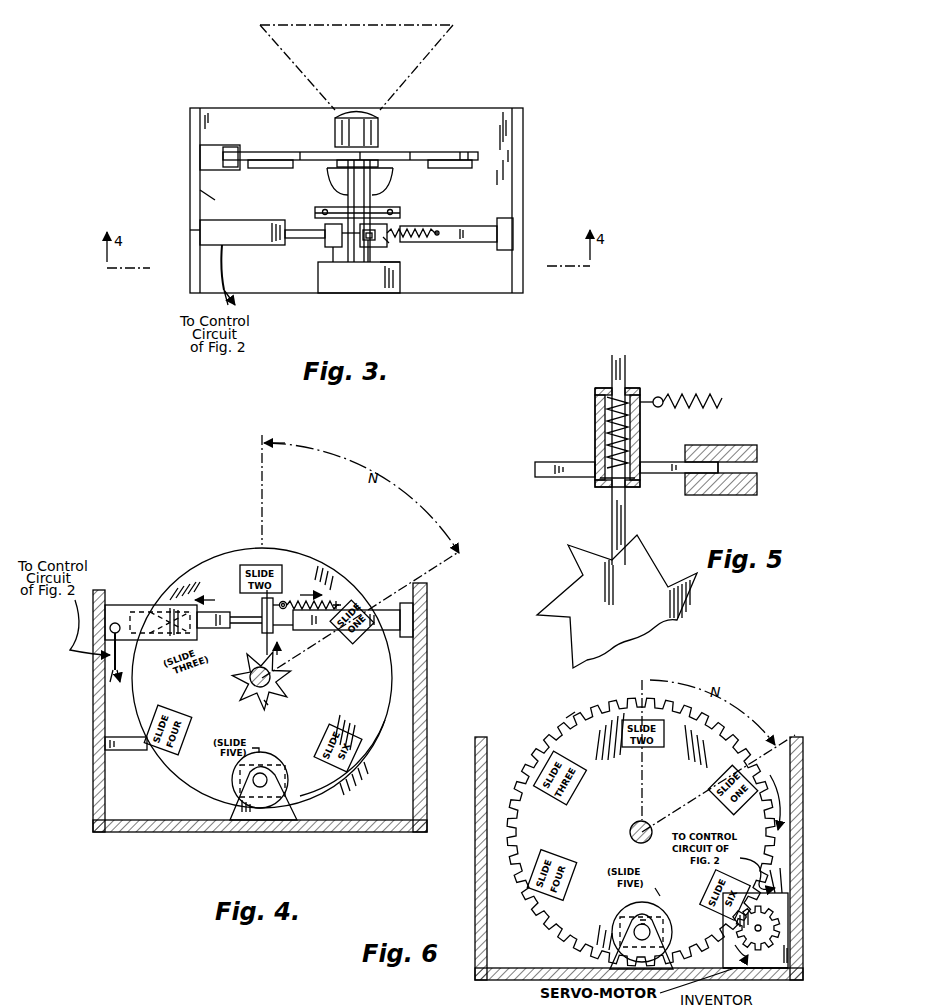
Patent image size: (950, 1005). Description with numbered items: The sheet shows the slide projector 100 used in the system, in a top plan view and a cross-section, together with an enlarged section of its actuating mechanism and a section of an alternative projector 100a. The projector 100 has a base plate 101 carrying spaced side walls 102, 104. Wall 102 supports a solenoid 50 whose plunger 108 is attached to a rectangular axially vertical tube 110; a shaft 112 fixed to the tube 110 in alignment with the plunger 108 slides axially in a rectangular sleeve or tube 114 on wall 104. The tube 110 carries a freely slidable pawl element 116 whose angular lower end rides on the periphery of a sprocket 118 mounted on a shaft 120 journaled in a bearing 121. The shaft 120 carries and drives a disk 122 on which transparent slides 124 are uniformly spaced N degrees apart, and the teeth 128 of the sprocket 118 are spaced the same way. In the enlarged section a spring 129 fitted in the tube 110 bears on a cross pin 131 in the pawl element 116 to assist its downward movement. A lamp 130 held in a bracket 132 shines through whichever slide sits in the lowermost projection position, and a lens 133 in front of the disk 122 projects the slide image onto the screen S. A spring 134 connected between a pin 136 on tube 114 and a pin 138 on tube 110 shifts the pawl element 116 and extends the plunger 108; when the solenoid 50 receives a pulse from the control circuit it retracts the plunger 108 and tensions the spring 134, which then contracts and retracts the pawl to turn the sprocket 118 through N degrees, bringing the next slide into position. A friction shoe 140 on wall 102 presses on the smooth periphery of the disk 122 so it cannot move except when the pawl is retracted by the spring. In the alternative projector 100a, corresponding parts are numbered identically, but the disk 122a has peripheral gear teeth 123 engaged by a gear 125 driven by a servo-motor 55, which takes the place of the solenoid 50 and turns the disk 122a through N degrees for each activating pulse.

In FIG. 3, the screen S is at (413, 26).
In FIG. 3, the solenoid 50 is at (250, 235).
In FIG. 4, the solenoid 50 is at (140, 605).
In FIG. 6, the servo-motor 55 is at (785, 905).
In FIG. 3, the slide projector 100 is at (530, 150).
In FIG. 6, the slide projector 100 is at (490, 693).
In FIG. 6, the projector 100a is at (805, 742).
In FIG. 3, the base plate 101 is at (215, 198).
In FIG. 4, the base plate 101 is at (335, 832).
In FIG. 6, the base plate 101 is at (510, 978).
In FIG. 3, the side wall 102 is at (196, 222).
In FIG. 4, the side wall 102 is at (97, 800).
In FIG. 6, the side wall 102 is at (477, 885).
In FIG. 4, the side wall 104 is at (427, 622).
In FIG. 6, the side wall 104 is at (795, 765).
In FIG. 3, the plunger 108 is at (308, 238).
In FIG. 4, the plunger 108 is at (215, 612).
In FIG. 5, the plunger 108 is at (552, 472).
In FIG. 3, the rectangular axially vertical tube 110 is at (347, 250).
In FIG. 4, the rectangular axially vertical tube 110 is at (262, 600).
In FIG. 5, the rectangular axially vertical tube 110 is at (597, 408).
In FIG. 4, the shaft 112 is at (290, 630).
In FIG. 5, the shaft 112 is at (662, 475).
In FIG. 3, the rectangular sleeve or tube 114 is at (465, 226).
In FIG. 4, the rectangular sleeve or tube 114 is at (385, 610).
In FIG. 5, the rectangular sleeve or tube 114 is at (723, 447).
In FIG. 3, the pawl element 116 is at (367, 262).
In FIG. 4, the pawl element 116 is at (262, 640).
In FIG. 5, the pawl element 116 is at (612, 365).
In FIG. 3, the sprocket 118 is at (334, 258).
In FIG. 4, the sprocket 118 is at (288, 683).
In FIG. 5, the sprocket 118 is at (648, 612).
In FIG. 3, the shaft 120 is at (365, 184).
In FIG. 4, the shaft 120 is at (255, 690).
In FIG. 6, the shaft 120 is at (632, 829).
In FIG. 3, the bearing 121 is at (378, 265).
In FIG. 3, the disk 122 is at (265, 160).
In FIG. 4, the disk 122 is at (360, 750).
In FIG. 6, the disk 122a is at (600, 712).
In FIG. 6, the peripheral gear teeth 123 is at (566, 718).
In FIG. 3, the transparent slides 124 is at (273, 168).
In FIG. 4, the transparent slides 124 is at (328, 790).
In FIG. 6, the gear 125 is at (790, 968).
In FIG. 3, the teeth 128 is at (395, 275).
In FIG. 4, the teeth 128 is at (268, 703).
In FIG. 5, the spring 129 is at (606, 447).
In FIG. 3, the lamp 130 is at (336, 185).
In FIG. 4, the lamp 130 is at (232, 780).
In FIG. 5, the cross pin 131 is at (598, 482).
In FIG. 3, the bracket 132 is at (400, 212).
In FIG. 4, the bracket 132 is at (258, 808).
In FIG. 3, the lens 133 is at (380, 128).
In FIG. 3, the spring 134 is at (385, 242).
In FIG. 4, the spring 134 is at (338, 603).
In FIG. 5, the spring 134 is at (703, 408).
In FIG. 3, the pin 136 is at (418, 240).
In FIG. 4, the pin 136 is at (335, 603).
In FIG. 4, the pin 138 is at (285, 600).
In FIG. 5, the pin 138 is at (663, 398).
In FIG. 3, the friction shoe 140 is at (205, 158).
In FIG. 4, the friction shoe 140 is at (134, 750).